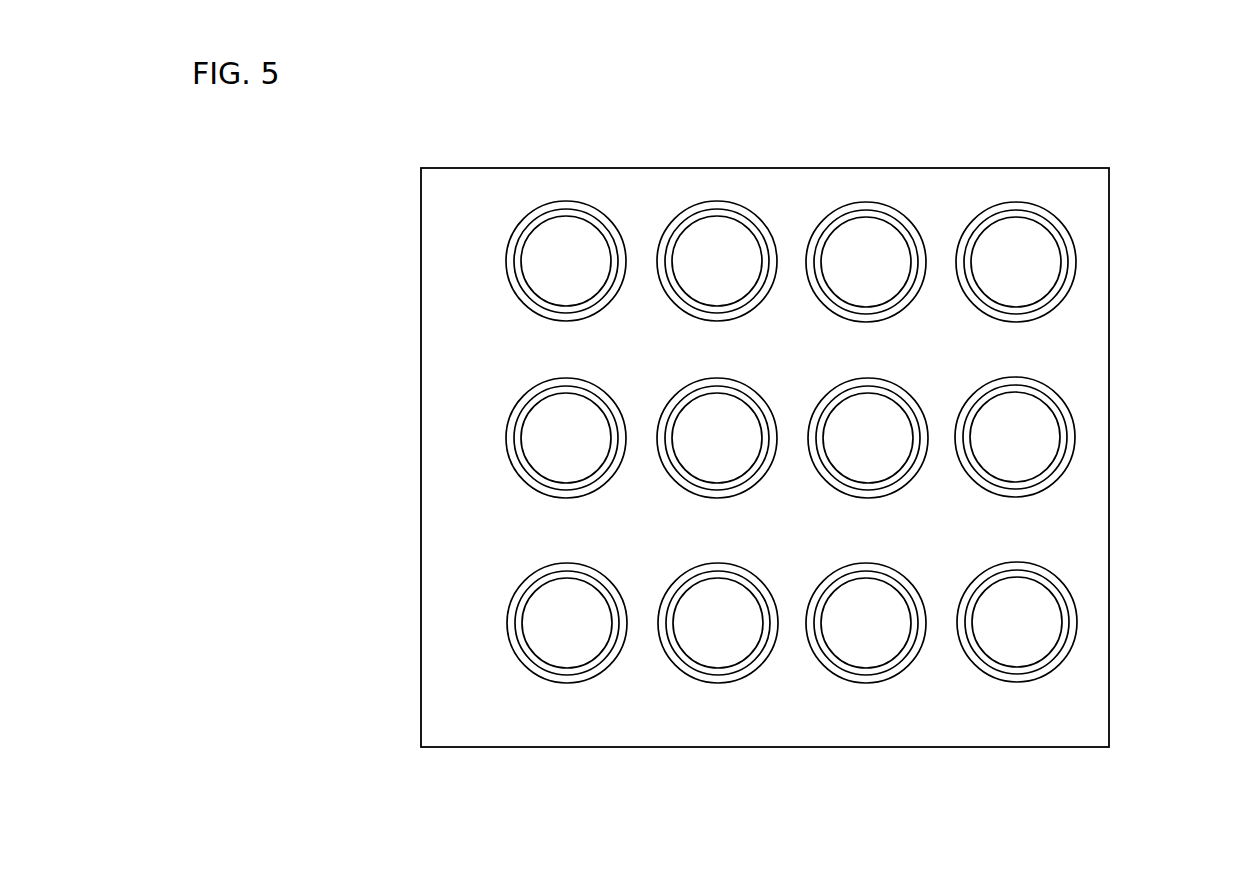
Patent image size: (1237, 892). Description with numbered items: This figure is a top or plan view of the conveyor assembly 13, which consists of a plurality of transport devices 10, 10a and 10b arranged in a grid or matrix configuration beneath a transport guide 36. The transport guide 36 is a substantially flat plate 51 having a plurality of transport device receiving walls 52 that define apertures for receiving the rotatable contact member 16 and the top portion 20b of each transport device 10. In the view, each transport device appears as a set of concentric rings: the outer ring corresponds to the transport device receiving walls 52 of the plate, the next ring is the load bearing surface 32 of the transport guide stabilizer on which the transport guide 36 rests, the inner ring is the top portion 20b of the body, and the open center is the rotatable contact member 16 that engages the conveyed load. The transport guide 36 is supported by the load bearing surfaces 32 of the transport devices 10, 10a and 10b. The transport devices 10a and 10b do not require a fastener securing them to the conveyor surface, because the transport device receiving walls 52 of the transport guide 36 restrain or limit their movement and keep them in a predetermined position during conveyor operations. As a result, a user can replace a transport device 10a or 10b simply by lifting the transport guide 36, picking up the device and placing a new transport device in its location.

The transport device 10 is at (806, 495).
The transport device 10a is at (746, 510).
The transport device 10b is at (878, 511).
The conveyor assembly 13 is at (1138, 126).
The rotatable contact member 16 is at (546, 266).
The top portion 20b is at (546, 305).
The load bearing surface 32 is at (562, 323).
The transport guide 36 is at (476, 163).
The flat plate 51 is at (455, 344).
The transport device receiving walls 52 is at (611, 222).